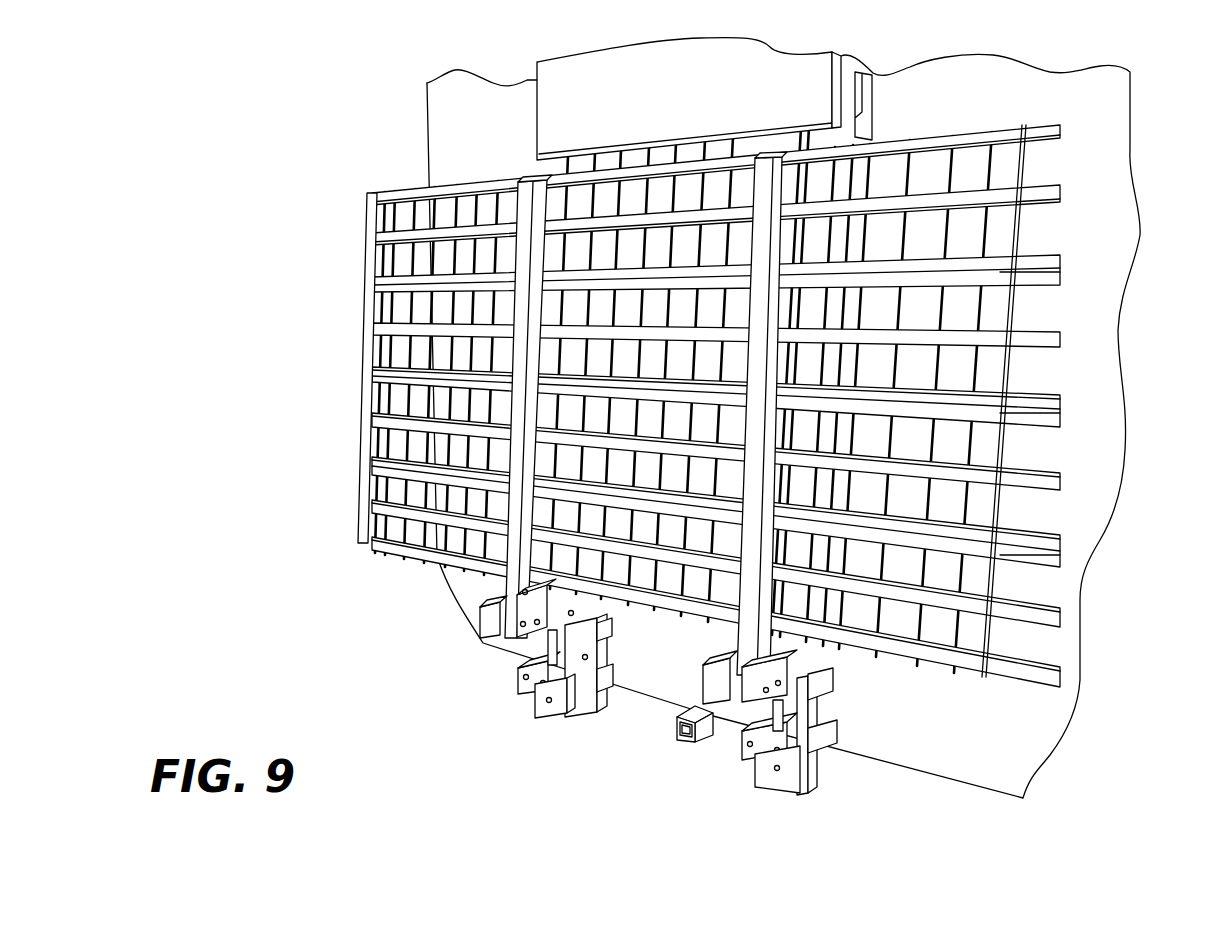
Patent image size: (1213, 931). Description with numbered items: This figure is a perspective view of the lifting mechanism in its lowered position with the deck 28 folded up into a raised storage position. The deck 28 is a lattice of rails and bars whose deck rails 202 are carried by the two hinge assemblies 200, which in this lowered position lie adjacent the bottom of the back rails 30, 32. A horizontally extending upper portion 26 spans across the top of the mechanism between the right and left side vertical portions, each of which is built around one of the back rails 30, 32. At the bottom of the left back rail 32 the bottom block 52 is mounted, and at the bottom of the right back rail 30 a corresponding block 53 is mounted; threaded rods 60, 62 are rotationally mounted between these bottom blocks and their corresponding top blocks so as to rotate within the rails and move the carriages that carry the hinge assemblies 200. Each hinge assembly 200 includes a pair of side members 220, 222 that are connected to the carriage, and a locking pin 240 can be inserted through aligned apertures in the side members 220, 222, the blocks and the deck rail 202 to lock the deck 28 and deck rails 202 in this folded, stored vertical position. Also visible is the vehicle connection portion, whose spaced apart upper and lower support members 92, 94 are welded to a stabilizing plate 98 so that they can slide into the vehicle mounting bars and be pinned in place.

The horizontally extending upper portion 26 is at (593, 50).
The deck 28 is at (1062, 262).
The deck rail 202 is at (522, 207).
The side member 220 is at (548, 590).
The side member 222 is at (482, 621).
The locking pin 240 is at (523, 626).
The threaded rod 62 is at (547, 651).
The bottom block 52 is at (530, 684).
The back rail 32 is at (557, 713).
The hinge assembly 200 is at (592, 715).
The upper support member 92 is at (603, 634).
The stabilizing plate 98 is at (593, 659).
The lower support member 94 is at (610, 677).
The threaded rod 60 is at (768, 696).
The block 53 is at (760, 755).
The back rail 30 is at (774, 783).